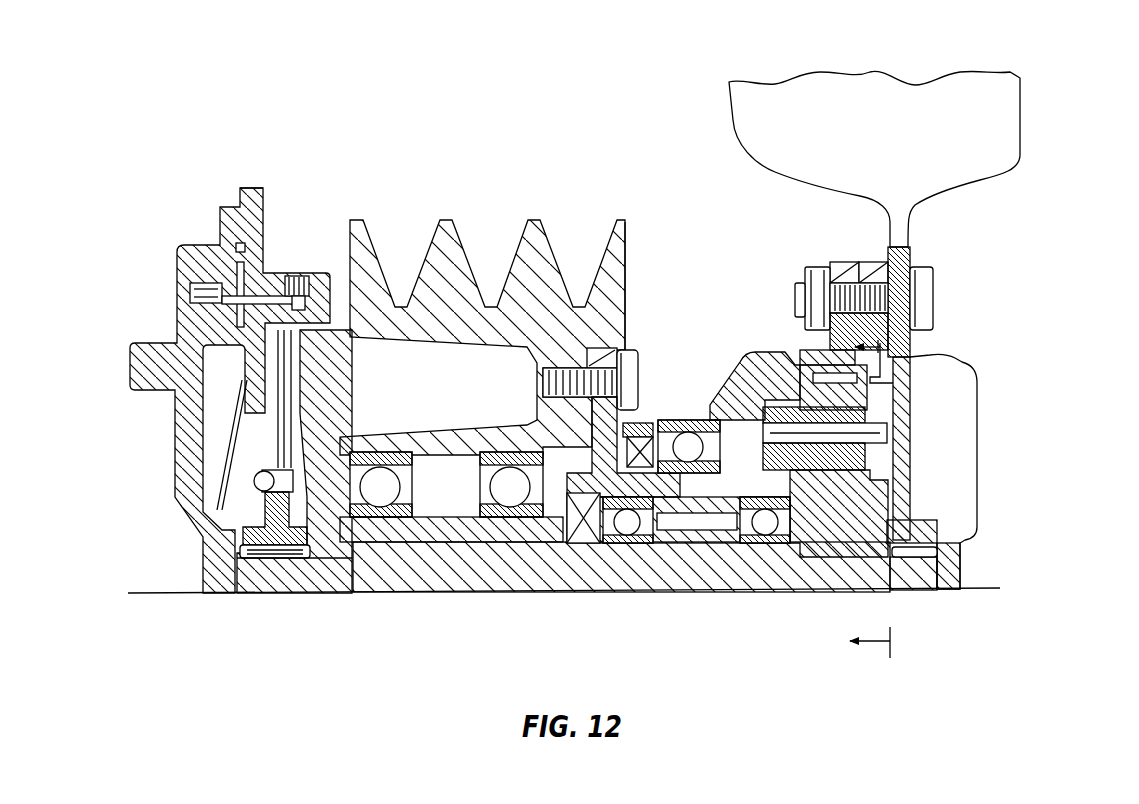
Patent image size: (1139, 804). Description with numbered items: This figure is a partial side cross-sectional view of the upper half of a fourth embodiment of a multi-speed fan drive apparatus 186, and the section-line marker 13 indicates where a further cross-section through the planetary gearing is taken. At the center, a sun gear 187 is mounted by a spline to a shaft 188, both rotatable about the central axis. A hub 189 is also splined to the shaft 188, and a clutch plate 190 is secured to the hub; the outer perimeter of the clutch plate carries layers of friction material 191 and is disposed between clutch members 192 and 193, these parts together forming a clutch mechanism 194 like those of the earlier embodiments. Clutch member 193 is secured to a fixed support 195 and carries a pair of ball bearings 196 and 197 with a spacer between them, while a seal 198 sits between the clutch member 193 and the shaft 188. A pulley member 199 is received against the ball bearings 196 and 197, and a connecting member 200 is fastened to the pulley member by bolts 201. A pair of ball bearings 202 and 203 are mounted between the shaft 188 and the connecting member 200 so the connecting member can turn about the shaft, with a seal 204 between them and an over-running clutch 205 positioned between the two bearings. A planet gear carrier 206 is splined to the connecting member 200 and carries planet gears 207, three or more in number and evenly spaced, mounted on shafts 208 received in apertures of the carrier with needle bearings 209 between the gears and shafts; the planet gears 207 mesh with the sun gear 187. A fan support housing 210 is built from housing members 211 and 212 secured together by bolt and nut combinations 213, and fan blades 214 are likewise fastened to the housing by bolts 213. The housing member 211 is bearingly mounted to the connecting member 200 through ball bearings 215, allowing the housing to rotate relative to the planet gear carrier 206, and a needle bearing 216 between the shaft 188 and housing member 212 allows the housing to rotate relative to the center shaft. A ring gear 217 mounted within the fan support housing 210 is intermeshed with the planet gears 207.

The apparatus 186 is at (488, 220).
The sun gear 187 is at (830, 535).
The shaft 188 is at (606, 577).
The hub 189 is at (268, 512).
The clutch plate 190 is at (333, 380).
The friction material 191 is at (330, 364).
The clutch member 192 is at (250, 358).
The clutch member 193 is at (320, 392).
The clutch mechanism 194 is at (305, 210).
The fixed support 195 is at (185, 270).
The ball bearing 196 is at (380, 497).
The ball bearing 197 is at (507, 497).
The seal 198 is at (320, 545).
The pulley member 199 is at (627, 250).
The connecting member 200 is at (548, 410).
The bolts 201 is at (634, 350).
The ball bearing 202 is at (640, 525).
The ball bearing 203 is at (765, 525).
The seal 204 is at (582, 540).
The over-running clutch 205 is at (695, 520).
The planet gear carrier 206 is at (750, 350).
The planet gears 207 is at (855, 390).
The shafts 208 is at (870, 432).
The needle bearings 209 is at (875, 458).
The fan support housing 210 is at (762, 228).
The housing member 211 is at (753, 350).
The housing member 212 is at (918, 370).
The bolt and nut combinations 213 is at (918, 278).
The fan blades 214 is at (997, 101).
The ball bearings 215 is at (686, 445).
The needle bearing 216 is at (915, 548).
The ring gear 217 is at (777, 350).
The section line 13 is at (886, 495).